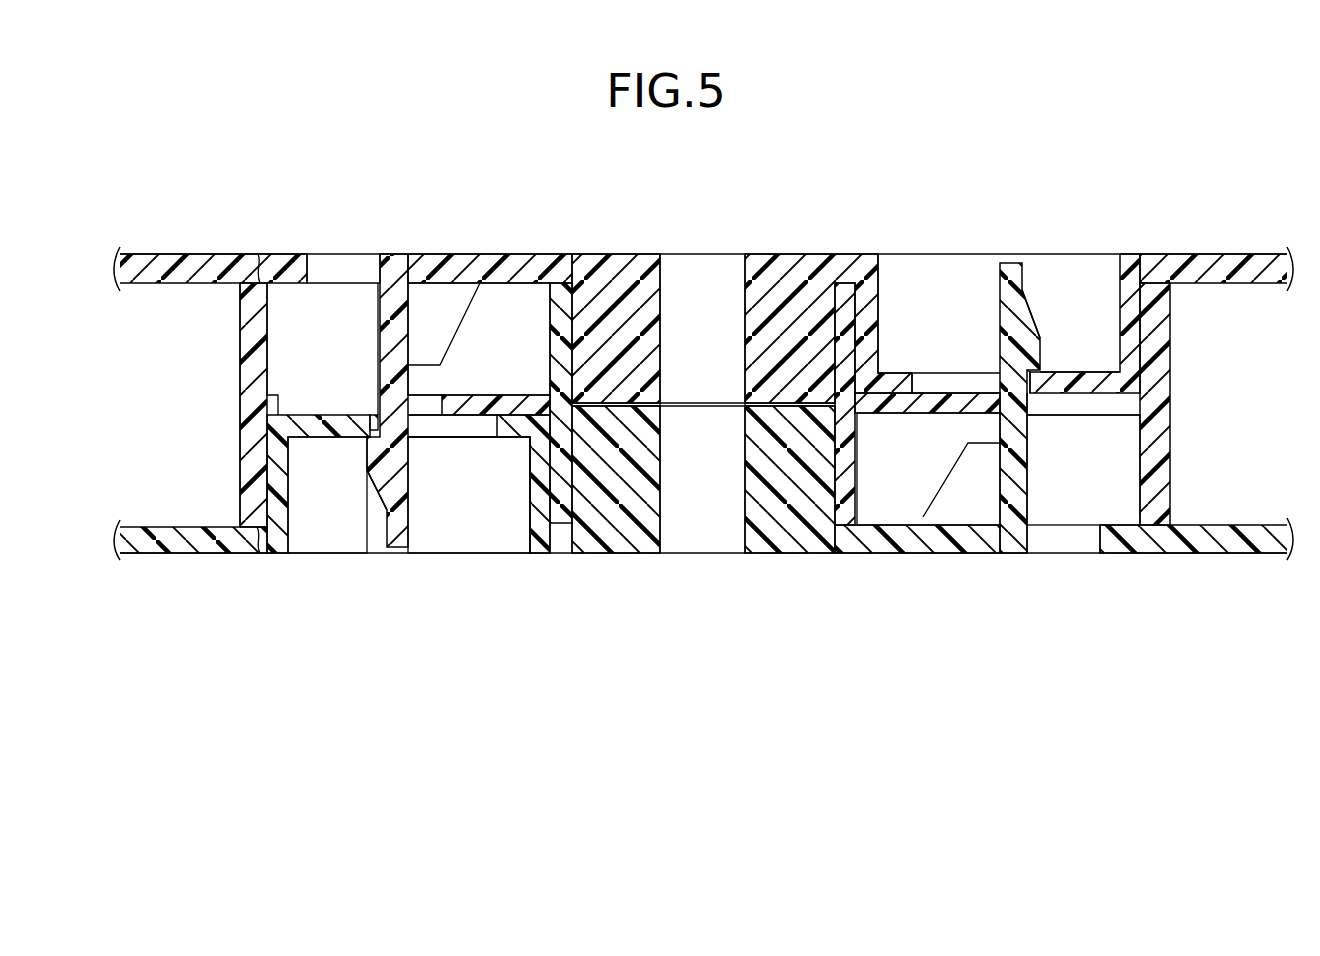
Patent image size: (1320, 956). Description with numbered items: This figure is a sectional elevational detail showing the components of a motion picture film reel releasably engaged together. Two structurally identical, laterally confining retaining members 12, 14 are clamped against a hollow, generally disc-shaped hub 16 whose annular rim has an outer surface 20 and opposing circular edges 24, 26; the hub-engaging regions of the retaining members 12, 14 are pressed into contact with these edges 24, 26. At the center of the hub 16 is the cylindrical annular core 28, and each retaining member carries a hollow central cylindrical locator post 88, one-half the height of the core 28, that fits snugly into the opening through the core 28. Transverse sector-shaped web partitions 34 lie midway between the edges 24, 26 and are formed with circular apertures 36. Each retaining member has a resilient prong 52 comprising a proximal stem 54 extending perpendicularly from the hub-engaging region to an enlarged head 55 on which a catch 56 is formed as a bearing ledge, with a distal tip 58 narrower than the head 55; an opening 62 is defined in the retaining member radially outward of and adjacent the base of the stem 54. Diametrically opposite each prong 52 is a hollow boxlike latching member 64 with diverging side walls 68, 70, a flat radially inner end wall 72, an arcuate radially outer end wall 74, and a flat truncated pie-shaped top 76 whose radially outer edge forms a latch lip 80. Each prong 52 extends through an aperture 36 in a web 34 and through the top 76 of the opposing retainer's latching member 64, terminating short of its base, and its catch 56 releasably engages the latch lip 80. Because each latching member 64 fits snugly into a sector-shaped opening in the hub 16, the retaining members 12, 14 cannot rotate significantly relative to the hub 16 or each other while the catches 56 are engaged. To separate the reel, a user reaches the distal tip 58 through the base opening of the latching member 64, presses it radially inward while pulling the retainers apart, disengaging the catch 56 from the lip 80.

The retaining member 12 is at (208, 232).
The retaining member 14 is at (1199, 566).
The hub 16 is at (220, 394).
The outer surface 20 is at (238, 341).
The edge 24 is at (262, 266).
The edge 26 is at (263, 529).
The core 28 is at (830, 328).
The web partition 34 is at (477, 419).
The aperture 36 is at (425, 405).
The prong 52 is at (412, 496).
The proximal stem 54 is at (378, 321).
The head 55 is at (373, 481).
The catch 56 is at (372, 437).
The distal tip 58 is at (410, 526).
The opening 62 is at (340, 266).
The latching member 64 is at (880, 400).
The side wall 68 is at (506, 303).
The side wall 70 is at (942, 278).
The inner end wall 72 is at (528, 501).
The outer end wall 74 is at (267, 474).
The top 76 is at (522, 414).
The latch lip 80 is at (340, 439).
The locator post 88 is at (662, 348).